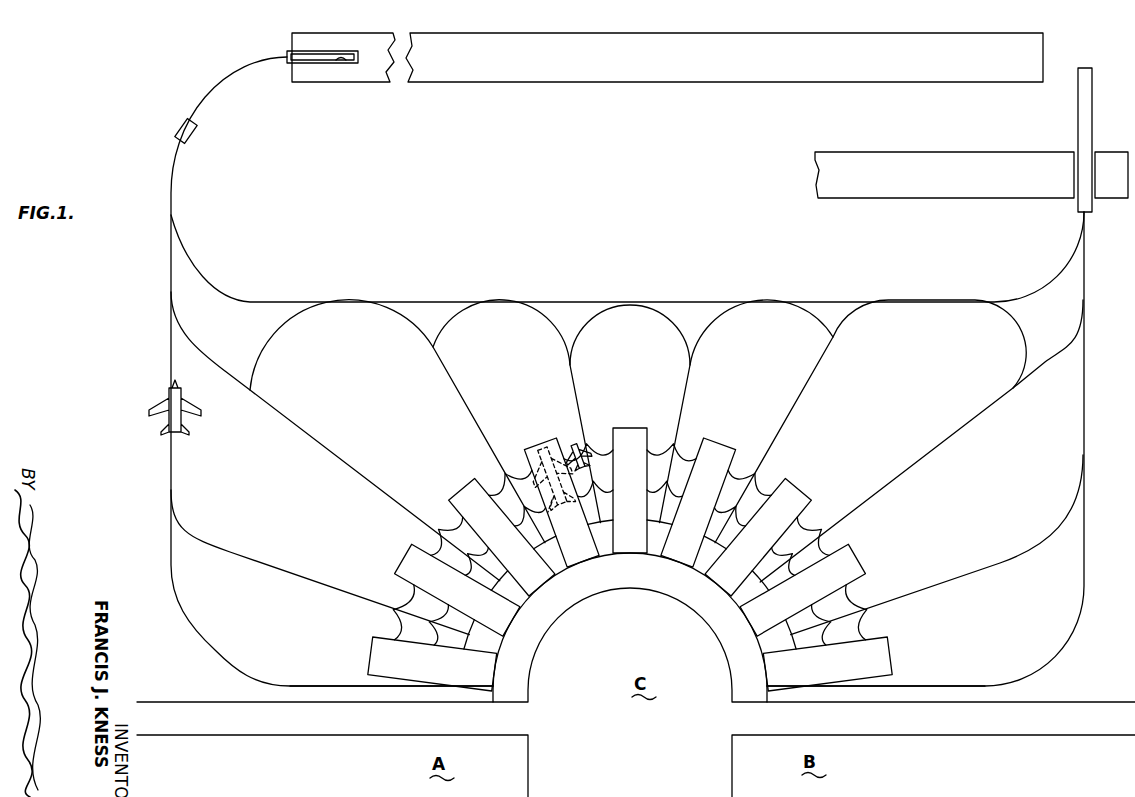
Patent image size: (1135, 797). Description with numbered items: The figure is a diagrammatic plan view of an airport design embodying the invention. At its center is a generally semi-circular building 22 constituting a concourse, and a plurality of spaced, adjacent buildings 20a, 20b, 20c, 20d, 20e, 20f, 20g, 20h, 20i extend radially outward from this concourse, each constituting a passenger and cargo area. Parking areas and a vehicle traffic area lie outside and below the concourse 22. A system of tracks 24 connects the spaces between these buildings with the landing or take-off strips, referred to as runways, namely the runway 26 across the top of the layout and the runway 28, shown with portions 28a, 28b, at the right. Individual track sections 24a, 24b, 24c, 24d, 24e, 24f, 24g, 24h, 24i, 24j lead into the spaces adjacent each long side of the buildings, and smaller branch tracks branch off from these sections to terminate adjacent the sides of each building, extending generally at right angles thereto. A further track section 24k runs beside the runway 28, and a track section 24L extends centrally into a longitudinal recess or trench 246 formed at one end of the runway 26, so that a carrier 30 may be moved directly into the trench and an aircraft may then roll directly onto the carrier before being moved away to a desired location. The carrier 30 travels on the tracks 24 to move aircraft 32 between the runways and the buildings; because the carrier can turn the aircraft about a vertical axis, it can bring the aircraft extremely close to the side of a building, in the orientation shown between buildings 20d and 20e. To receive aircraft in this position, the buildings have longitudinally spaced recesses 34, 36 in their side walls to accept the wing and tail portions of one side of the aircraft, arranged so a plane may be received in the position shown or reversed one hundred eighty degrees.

The building 20a is at (430, 664).
The building 20b is at (453, 598).
The building 20c is at (518, 561).
The building 20d is at (580, 540).
The building 20e is at (640, 519).
The building 20f is at (705, 519).
The building 20g is at (758, 558).
The building 20h is at (794, 612).
The building 20i is at (816, 664).
The semi-circular building 22 is at (590, 582).
The system of tracks 24 is at (184, 204).
The track section 24a is at (330, 686).
The track section 24b is at (340, 590).
The track section 24c is at (380, 489).
The track section 24d is at (485, 425).
The track section 24e is at (595, 385).
The track section 24f is at (682, 404).
The track section 24g is at (792, 410).
The track section 24h is at (898, 478).
The track section 24i is at (927, 594).
The track section 24j is at (958, 687).
The track section 24k is at (1086, 160).
The track section 24L is at (332, 62).
The longitudinal recess or trench 246 is at (340, 63).
The landing or take-off strip 26 is at (556, 82).
The landing or take-off strip 28 is at (972, 194).
The runway portion 28a is at (1112, 175).
The runway portion 28b is at (944, 175).
The carrier 30 is at (190, 136).
The aircraft 32 is at (160, 404).
The recess 34 is at (548, 440).
The recess 36 is at (557, 510).